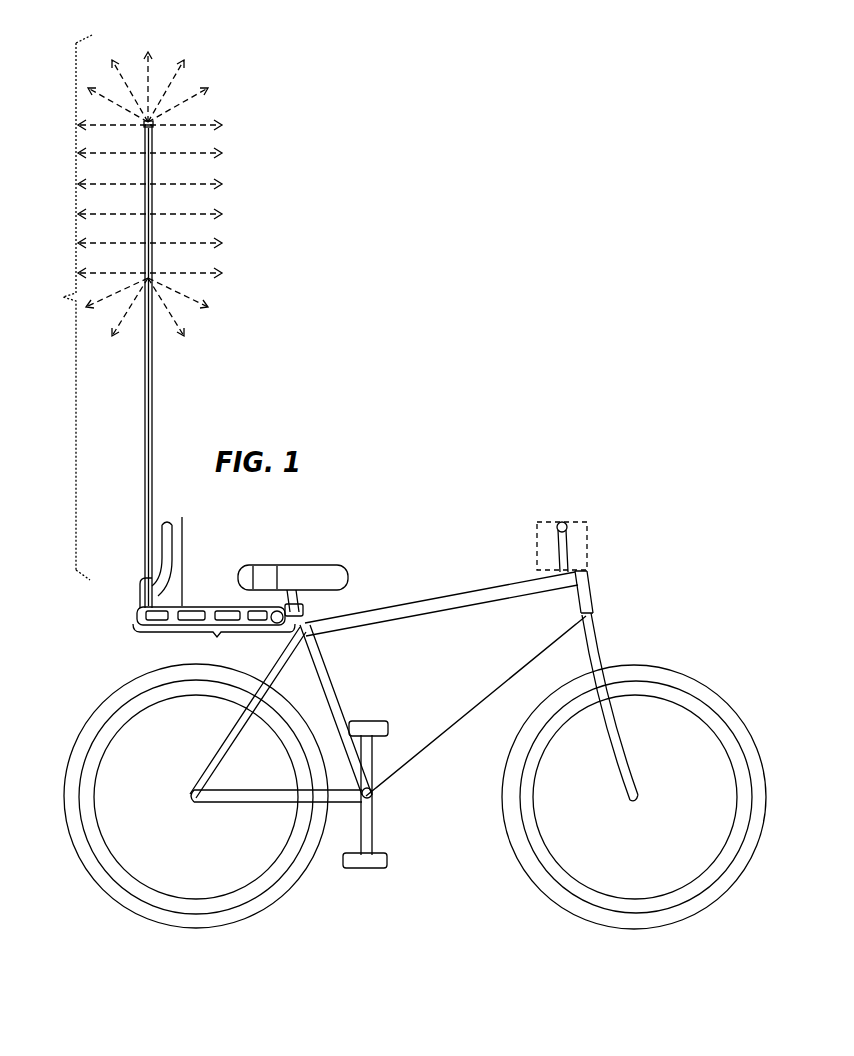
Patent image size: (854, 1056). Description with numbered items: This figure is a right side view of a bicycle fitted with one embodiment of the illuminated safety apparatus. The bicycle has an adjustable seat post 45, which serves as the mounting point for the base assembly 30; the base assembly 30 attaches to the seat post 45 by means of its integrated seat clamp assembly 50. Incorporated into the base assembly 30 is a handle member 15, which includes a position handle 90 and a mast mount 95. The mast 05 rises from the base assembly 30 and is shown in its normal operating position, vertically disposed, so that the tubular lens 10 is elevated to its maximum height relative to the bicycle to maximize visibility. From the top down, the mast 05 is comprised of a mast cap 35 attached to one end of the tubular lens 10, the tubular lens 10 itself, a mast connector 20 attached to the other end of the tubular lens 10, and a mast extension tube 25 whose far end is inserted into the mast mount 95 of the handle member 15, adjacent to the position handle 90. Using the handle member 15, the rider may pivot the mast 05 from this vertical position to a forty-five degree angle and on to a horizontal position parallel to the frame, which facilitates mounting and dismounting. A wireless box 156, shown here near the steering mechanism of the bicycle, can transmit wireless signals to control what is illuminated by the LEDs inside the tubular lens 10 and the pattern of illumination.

The mast 05 is at (60, 307).
The tubular lens 10 is at (153, 140).
The handle member 15 is at (197, 561).
The mast connector 20 is at (148, 285).
The mast extension tube 25 is at (153, 370).
The base assembly 30 is at (214, 636).
The mast cap 35 is at (158, 78).
The seat post 45 is at (344, 590).
The seat clamp assembly 50 is at (303, 609).
The position handle 90 is at (163, 530).
The mast mount 95 is at (141, 582).
The wireless box 156 is at (562, 547).